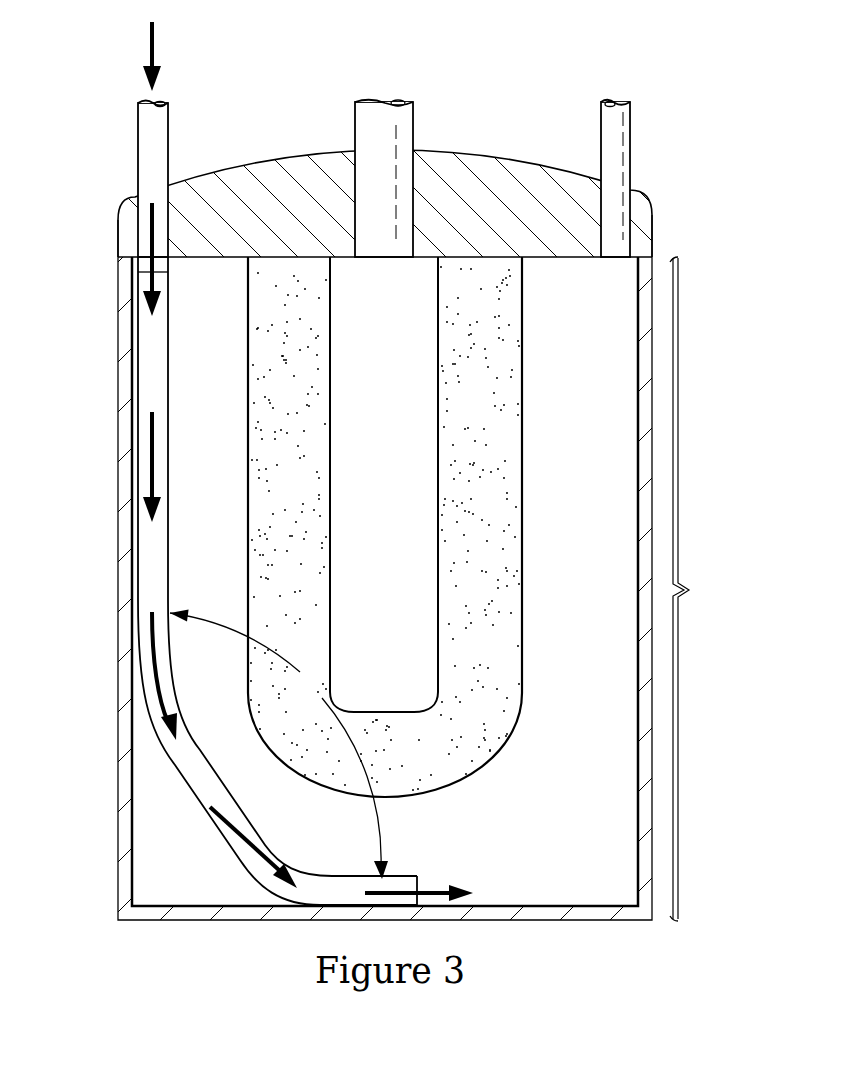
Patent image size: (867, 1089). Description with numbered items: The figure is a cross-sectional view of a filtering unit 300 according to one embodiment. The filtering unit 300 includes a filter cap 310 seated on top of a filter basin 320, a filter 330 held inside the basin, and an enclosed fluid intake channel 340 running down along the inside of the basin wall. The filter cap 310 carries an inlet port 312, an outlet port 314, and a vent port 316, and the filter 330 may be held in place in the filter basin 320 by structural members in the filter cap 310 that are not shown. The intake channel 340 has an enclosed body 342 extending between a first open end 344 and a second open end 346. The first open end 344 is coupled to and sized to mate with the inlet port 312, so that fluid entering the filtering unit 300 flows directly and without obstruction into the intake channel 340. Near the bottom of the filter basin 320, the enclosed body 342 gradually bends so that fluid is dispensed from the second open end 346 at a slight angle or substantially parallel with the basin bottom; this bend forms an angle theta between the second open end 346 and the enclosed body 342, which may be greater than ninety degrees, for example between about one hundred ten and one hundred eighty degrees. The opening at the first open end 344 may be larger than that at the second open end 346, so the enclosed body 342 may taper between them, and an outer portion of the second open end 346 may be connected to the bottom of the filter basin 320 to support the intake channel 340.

The filtering unit 300 is at (433, 467).
The filter cap 310 is at (485, 152).
The inlet port 312 is at (137, 150).
The outlet port 314 is at (355, 122).
The vent port 316 is at (632, 152).
The filter basin 320 is at (684, 590).
The filter 330 is at (599, 480).
The enclosed fluid intake channel 340 is at (255, 463).
The enclosed body 342 is at (145, 372).
The first open end 344 is at (131, 282).
The second open end 346 is at (445, 843).